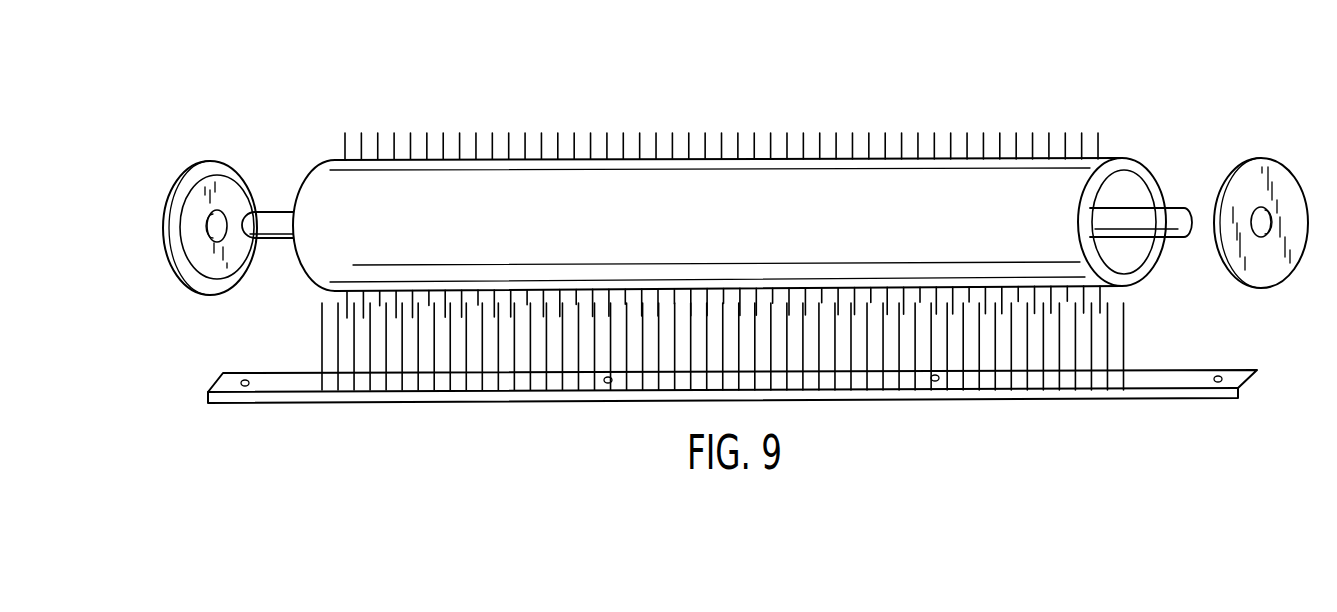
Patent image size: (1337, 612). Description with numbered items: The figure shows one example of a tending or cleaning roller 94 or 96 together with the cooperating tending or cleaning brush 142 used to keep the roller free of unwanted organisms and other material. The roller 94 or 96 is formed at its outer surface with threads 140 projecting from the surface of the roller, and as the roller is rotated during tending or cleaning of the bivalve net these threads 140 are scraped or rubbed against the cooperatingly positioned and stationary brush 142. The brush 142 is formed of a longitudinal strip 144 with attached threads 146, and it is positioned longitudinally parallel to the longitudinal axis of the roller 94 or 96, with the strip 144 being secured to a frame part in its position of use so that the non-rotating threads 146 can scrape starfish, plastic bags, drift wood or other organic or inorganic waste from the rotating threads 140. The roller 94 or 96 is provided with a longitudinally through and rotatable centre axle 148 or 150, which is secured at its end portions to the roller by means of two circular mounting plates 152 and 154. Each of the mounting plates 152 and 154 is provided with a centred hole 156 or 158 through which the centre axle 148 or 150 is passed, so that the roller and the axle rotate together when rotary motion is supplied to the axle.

The tending or cleaning roller 94 is at (683, 102).
The tending or cleaning roller 96 is at (729, 161).
The threads 140 is at (887, 147).
The tending or cleaning brush 142 is at (740, 375).
The longitudinal strip 144 is at (1168, 378).
The threads 146 is at (1105, 338).
The centre axle 148 is at (1170, 215).
The centre axle 150 is at (1156, 186).
The circular mounting plate 152 is at (218, 185).
The circular mounting plate 154 is at (1255, 170).
The centred hole 156 is at (223, 232).
The centred hole 158 is at (1262, 222).